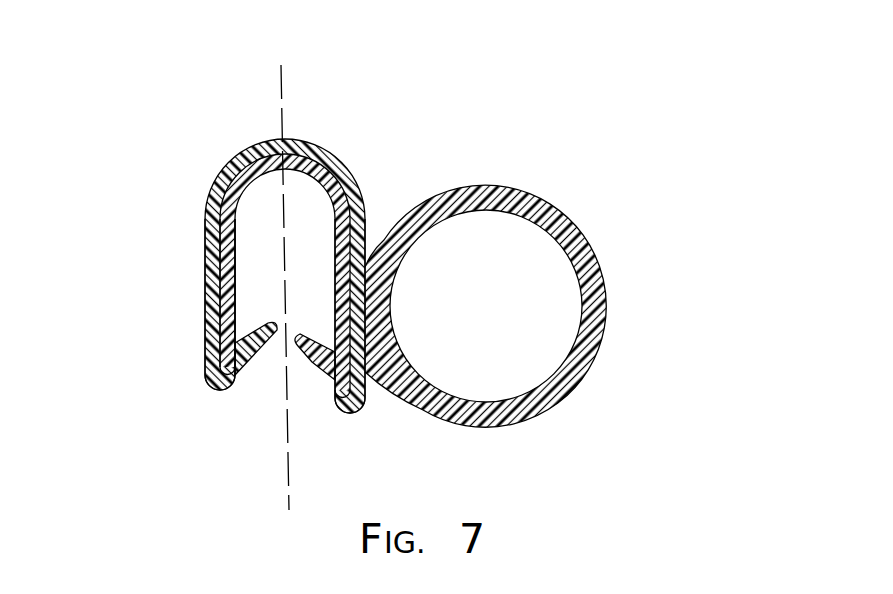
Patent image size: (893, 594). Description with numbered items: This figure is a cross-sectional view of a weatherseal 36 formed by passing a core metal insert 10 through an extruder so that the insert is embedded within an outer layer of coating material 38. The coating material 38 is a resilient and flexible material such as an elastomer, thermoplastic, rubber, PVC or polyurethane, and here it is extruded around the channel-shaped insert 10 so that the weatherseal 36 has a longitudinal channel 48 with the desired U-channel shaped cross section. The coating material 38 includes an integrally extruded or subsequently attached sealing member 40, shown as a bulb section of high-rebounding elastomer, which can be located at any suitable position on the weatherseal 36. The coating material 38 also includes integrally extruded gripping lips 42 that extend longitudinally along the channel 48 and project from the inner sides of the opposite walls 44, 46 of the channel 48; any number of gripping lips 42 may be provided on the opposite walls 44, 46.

The core metal insert 10 is at (307, 150).
The weatherseal 36 is at (260, 276).
The coating material 38 is at (289, 139).
The sealing member 40 is at (503, 184).
The gripping lips 42 is at (305, 358).
The wall 44 is at (205, 298).
The wall 46 is at (366, 233).
The channel 48 is at (242, 243).